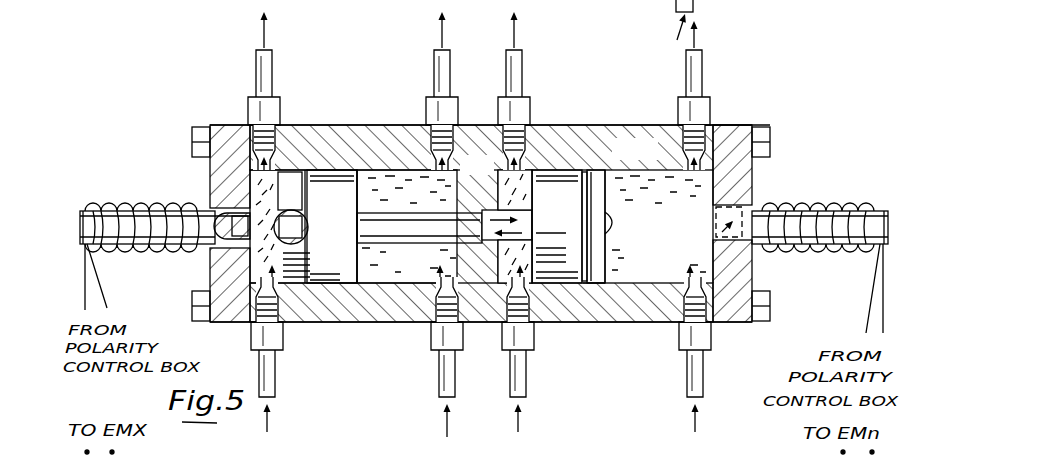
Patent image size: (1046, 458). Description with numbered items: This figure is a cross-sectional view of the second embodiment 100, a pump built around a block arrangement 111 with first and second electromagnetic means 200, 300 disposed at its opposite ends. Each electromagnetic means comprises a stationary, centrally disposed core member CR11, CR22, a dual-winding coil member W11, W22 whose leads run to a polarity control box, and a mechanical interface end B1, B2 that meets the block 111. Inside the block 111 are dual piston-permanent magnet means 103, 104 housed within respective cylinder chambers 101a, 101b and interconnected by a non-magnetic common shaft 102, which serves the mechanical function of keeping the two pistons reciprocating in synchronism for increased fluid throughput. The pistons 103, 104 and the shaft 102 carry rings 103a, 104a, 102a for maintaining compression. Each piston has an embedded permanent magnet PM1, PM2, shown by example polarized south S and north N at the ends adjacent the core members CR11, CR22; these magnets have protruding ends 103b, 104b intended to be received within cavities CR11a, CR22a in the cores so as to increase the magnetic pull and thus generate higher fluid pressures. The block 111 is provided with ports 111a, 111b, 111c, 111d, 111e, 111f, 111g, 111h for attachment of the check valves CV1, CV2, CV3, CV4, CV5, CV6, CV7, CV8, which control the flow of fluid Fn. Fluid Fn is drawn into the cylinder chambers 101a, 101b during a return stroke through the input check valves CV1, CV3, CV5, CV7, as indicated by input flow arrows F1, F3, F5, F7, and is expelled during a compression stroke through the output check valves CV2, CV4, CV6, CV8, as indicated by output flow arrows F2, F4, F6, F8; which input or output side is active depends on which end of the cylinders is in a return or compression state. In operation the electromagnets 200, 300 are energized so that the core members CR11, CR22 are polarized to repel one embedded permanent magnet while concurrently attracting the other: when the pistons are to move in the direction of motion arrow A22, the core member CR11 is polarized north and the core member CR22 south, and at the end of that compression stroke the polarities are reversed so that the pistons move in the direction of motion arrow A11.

The second embodiment 100 is at (220, 65).
The block arrangement 111 is at (481, 223).
The input port 111a is at (287, 347).
The output port 111b is at (255, 150).
The input port 111c is at (436, 296).
The output port 111d is at (438, 150).
The input port 111e is at (533, 332).
The output port 111f is at (533, 112).
The input port 111g is at (710, 323).
The output port 111h is at (712, 110).
The mechanical interface end B1 is at (208, 174).
The mechanical interface end B2 is at (750, 192).
The first electromagnetic means 200 is at (207, 193).
The second electromagnetic means 300 is at (737, 122).
The core member CR11 is at (80, 228).
The cavity CR11a is at (210, 280).
The core member CR22 is at (890, 217).
The cavity CR22a is at (735, 247).
The dual-winding coil member W11 is at (105, 308).
The dual-winding coil member W22 is at (870, 312).
The piston-permanent magnet means 103 is at (345, 283).
The ring 103a is at (330, 275).
The protruding end 103b is at (305, 250).
The embedded permanent magnet PM1 is at (343, 199).
The south polarity S is at (291, 227).
The fluid Fn is at (427, 205).
The non-magnetic common shaft 102 is at (382, 226).
The ring 102a is at (485, 240).
The cylinder chamber 101a is at (400, 257).
The cylinder chamber 101b is at (620, 283).
The piston-permanent magnet means 104 is at (567, 173).
The ring 104a is at (585, 290).
The protruding end 104b is at (607, 236).
The motion arrow A11 is at (502, 208).
The motion arrow A22 is at (522, 278).
The embedded permanent magnet PM2 is at (598, 214).
The north polarity N is at (599, 226).
The check valve CV1 is at (250, 337).
The check valve CV2 is at (248, 107).
The check valve CV3 is at (432, 358).
The check valve CV4 is at (432, 120).
The check valve CV5 is at (535, 355).
The check valve CV6 is at (531, 98).
The check valve CV7 is at (680, 358).
The check valve CV8 is at (716, 108).
The input fluid flow F1 is at (269, 424).
The fluid output flow F2 is at (266, 33).
The input fluid flow F3 is at (445, 425).
The fluid output flow F4 is at (440, 35).
The input fluid flow F5 is at (520, 428).
The fluid output flow F6 is at (518, 38).
The input fluid flow F7 is at (672, 37).
The fluid output flow F8 is at (696, 37).